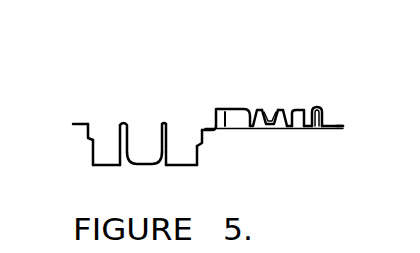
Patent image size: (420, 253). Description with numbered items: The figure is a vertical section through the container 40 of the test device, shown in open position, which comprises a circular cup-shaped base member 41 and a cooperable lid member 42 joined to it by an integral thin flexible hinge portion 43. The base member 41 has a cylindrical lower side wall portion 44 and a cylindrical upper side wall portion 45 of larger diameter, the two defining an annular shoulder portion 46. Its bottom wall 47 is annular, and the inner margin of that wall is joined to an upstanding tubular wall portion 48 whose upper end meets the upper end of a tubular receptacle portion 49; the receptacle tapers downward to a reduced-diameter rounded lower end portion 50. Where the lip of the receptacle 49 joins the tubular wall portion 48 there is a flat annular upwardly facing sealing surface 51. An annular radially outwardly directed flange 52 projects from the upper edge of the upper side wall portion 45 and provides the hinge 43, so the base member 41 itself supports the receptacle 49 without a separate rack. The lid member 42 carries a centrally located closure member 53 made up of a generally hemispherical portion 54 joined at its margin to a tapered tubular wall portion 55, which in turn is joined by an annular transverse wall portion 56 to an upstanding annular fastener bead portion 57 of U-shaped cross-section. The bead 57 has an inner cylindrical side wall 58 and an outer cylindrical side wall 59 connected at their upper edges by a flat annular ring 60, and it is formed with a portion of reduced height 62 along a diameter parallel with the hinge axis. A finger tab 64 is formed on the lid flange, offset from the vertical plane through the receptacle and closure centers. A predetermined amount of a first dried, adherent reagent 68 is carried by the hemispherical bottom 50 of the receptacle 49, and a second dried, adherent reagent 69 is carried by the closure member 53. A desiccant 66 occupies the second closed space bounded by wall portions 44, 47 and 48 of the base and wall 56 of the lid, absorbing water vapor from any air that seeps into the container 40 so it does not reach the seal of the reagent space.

The container 40 is at (303, 161).
The base member 41 is at (86, 149).
The lid member 42 is at (302, 131).
The hinge portion 43 is at (207, 128).
The cylindrical lower side wall portion 44 is at (199, 144).
The cylindrical upper side wall portion 45 is at (90, 130).
The annular shoulder portion 46 is at (97, 138).
The bottom wall 47 is at (190, 168).
The upstanding tubular wall portion 48 is at (183, 127).
The tubular receptacle portion 49 is at (131, 158).
The rounded lower end portion 50 is at (140, 168).
The sealing surface 51 is at (167, 122).
The flange 52 is at (76, 124).
The closure member 53 is at (283, 113).
The hemispherical portion 54 is at (265, 127).
The tapered tubular wall portion 55 is at (279, 128).
The annular transverse wall portion 56 is at (308, 114).
The fastener bead portion 57 is at (328, 106).
The inner cylindrical side wall 58 is at (233, 118).
The outer cylindrical side wall 59 is at (327, 113).
The flat annular ring 60 is at (227, 110).
The portion of reduced height 62 is at (271, 104).
The finger tab 64 is at (343, 127).
The desiccant 66 is at (118, 162).
The first dried, adherent reagent 68 is at (138, 160).
The second dried, adherent reagent 69 is at (304, 120).